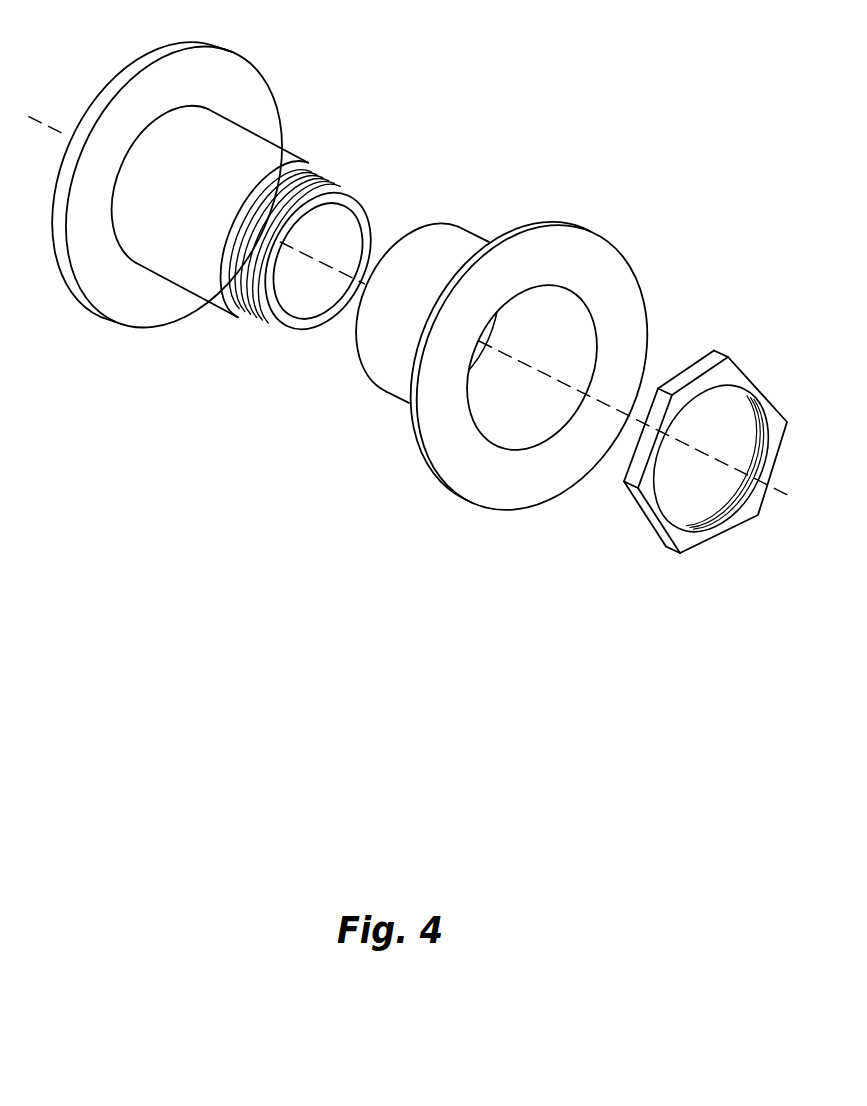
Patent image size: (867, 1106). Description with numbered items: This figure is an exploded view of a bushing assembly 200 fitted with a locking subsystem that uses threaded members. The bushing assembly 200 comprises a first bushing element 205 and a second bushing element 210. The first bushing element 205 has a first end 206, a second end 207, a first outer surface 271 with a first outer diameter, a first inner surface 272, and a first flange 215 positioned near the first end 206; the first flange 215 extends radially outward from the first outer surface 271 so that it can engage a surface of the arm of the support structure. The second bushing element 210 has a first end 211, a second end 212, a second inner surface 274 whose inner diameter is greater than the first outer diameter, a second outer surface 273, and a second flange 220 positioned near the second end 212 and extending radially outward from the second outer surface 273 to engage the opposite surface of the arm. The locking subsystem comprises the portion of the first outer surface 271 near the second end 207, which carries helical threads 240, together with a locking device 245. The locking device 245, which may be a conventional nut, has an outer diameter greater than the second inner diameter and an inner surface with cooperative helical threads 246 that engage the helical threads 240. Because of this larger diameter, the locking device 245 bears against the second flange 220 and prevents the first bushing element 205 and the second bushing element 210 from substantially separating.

The bushing assembly 200 is at (541, 66).
The first bushing element 205 is at (163, 360).
The first end 206 is at (188, 109).
The second end 207 is at (357, 198).
The second bushing element 210 is at (360, 462).
The first end 211 is at (430, 220).
The second end 212 is at (587, 297).
The first flange 215 is at (205, 68).
The second flange 220 is at (575, 248).
The helical threads 240 is at (257, 317).
The locking device 245 is at (710, 368).
The cooperative helical threads 246 is at (733, 513).
The first outer surface 271 is at (213, 155).
The first inner surface 272 is at (297, 305).
The second outer surface 273 is at (458, 245).
The second inner surface 274 is at (510, 433).